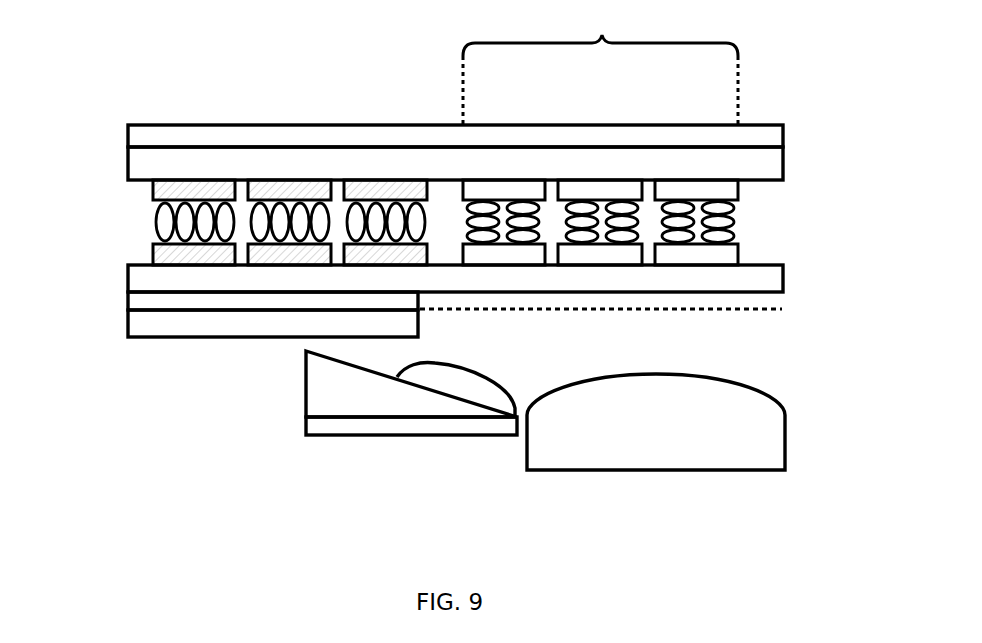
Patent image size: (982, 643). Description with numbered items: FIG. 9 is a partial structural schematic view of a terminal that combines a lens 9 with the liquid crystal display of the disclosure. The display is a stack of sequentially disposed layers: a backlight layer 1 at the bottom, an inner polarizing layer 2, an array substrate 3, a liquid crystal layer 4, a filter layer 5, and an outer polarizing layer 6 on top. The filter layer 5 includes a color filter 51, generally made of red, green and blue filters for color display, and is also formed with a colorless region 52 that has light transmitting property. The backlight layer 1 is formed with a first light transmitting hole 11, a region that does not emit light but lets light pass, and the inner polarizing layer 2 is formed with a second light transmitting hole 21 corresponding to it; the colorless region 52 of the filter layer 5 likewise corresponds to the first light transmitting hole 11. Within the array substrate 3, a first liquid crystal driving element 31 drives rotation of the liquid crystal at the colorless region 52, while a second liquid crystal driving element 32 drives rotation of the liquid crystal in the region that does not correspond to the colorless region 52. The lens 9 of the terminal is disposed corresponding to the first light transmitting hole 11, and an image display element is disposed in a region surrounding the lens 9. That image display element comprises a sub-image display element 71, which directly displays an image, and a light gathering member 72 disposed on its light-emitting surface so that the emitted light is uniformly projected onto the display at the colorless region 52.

The backlight layer 1 is at (233, 350).
The inner polarizing layer 2 is at (230, 292).
The array substrate 3 is at (503, 274).
The liquid crystal layer 4 is at (673, 202).
The filter layer 5 is at (503, 143).
The outer polarizing layer 6 is at (503, 107).
The lens 9 is at (706, 457).
The first light transmitting hole 11 is at (772, 368).
The second light transmitting hole 21 is at (658, 329).
The first liquid crystal driving element 31 is at (676, 242).
The second liquid crystal driving element 32 is at (228, 235).
The color filter 51 is at (230, 135).
The colorless region 52 is at (600, 101).
The sub-image display element 71 is at (354, 471).
The light gathering member 72 is at (354, 384).